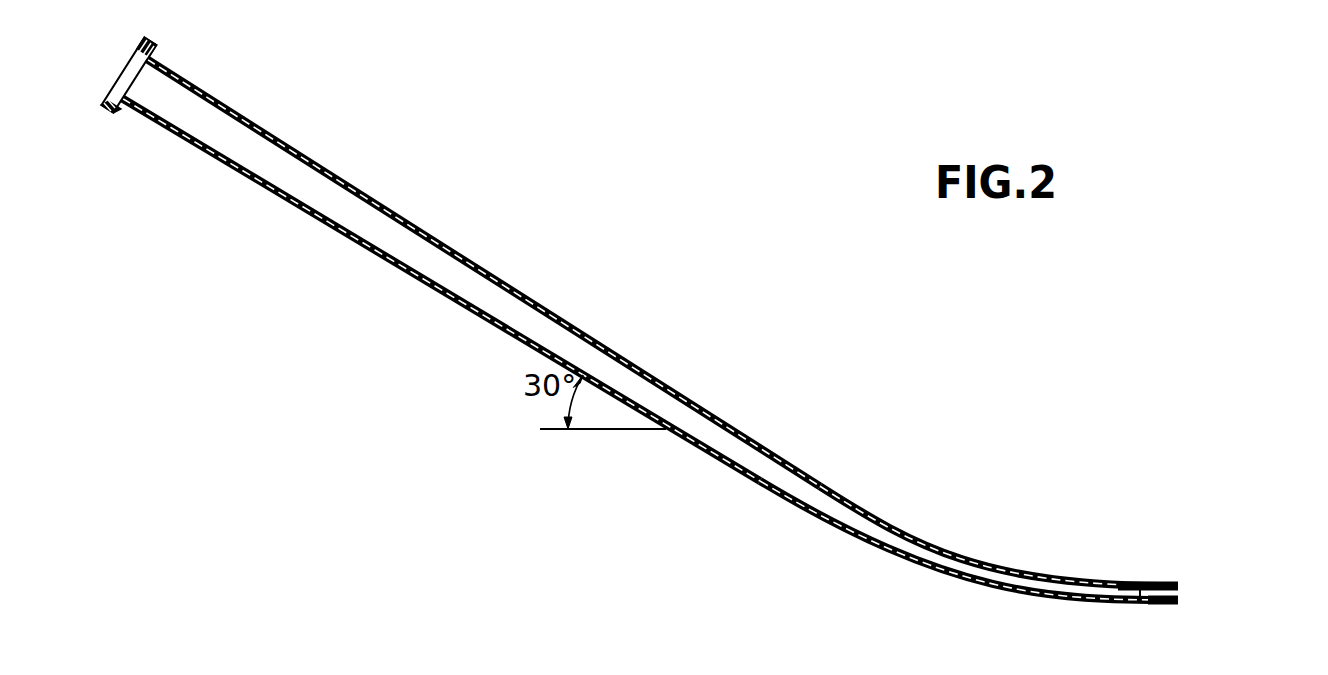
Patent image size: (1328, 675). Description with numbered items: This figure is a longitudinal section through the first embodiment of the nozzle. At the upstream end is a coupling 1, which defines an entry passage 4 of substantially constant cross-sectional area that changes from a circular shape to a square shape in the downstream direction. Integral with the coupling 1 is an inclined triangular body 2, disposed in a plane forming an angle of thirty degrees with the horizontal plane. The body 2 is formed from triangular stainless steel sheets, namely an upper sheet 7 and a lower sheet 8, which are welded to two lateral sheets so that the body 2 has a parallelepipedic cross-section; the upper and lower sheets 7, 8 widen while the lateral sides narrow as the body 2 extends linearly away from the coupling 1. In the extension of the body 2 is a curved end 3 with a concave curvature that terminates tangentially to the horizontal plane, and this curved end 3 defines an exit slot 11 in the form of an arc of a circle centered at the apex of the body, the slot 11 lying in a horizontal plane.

The coupling 1 is at (699, 321).
The inclined triangular body 2 is at (471, 257).
The curved end 3 is at (978, 553).
The entry passage 4 is at (158, 95).
The upper sheet 7 is at (249, 118).
The lower sheet 8 is at (452, 303).
The exit slot 11 is at (1175, 592).